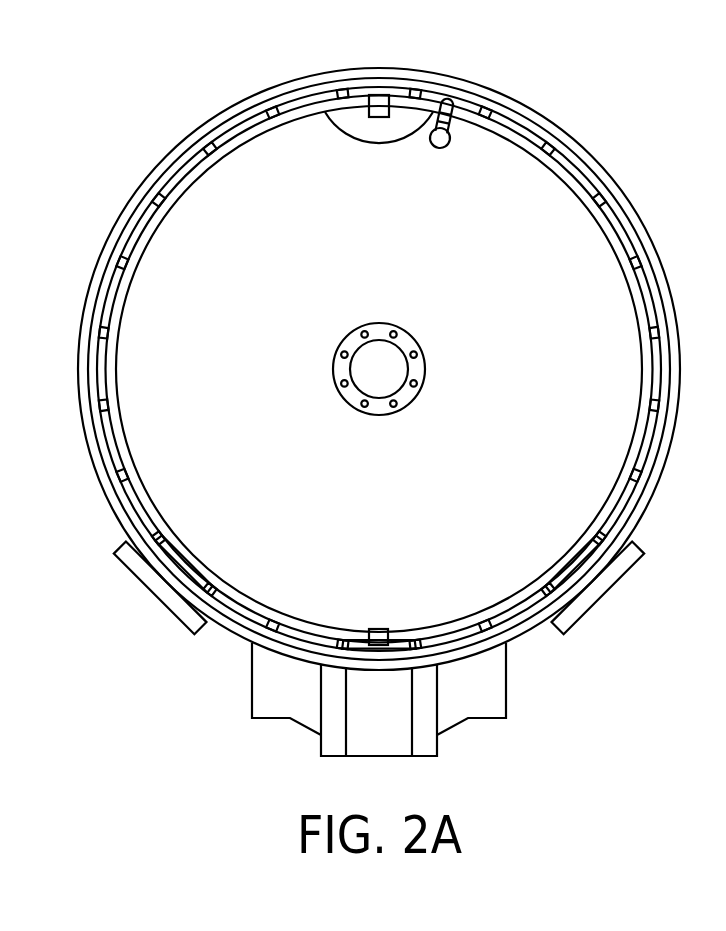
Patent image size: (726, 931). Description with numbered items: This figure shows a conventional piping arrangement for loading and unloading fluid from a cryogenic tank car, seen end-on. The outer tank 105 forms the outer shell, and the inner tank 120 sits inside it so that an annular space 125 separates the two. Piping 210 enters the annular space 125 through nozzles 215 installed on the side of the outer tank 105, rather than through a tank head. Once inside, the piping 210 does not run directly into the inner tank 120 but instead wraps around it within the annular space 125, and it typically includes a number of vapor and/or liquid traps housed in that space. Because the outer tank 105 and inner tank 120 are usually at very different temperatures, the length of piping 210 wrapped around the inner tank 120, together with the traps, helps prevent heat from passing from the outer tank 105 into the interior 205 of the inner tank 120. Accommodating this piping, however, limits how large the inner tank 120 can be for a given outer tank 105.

The outer tank 105 is at (548, 118).
The inner tank 120 is at (245, 142).
The annular space 125 is at (615, 238).
The interior 205 is at (218, 219).
The piping 210 is at (474, 100).
The nozzles 215 is at (196, 628).